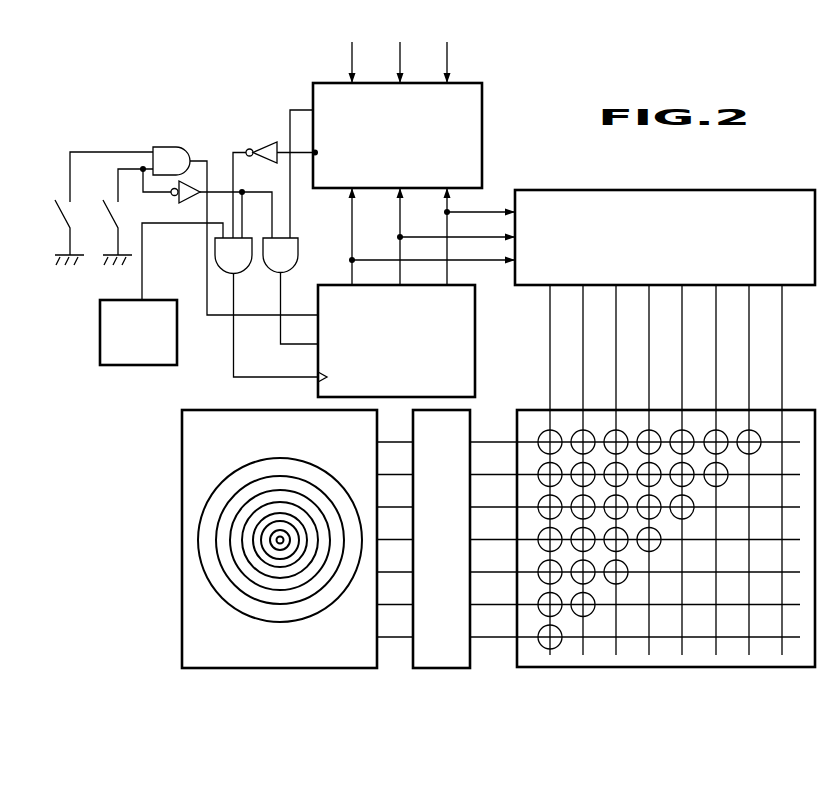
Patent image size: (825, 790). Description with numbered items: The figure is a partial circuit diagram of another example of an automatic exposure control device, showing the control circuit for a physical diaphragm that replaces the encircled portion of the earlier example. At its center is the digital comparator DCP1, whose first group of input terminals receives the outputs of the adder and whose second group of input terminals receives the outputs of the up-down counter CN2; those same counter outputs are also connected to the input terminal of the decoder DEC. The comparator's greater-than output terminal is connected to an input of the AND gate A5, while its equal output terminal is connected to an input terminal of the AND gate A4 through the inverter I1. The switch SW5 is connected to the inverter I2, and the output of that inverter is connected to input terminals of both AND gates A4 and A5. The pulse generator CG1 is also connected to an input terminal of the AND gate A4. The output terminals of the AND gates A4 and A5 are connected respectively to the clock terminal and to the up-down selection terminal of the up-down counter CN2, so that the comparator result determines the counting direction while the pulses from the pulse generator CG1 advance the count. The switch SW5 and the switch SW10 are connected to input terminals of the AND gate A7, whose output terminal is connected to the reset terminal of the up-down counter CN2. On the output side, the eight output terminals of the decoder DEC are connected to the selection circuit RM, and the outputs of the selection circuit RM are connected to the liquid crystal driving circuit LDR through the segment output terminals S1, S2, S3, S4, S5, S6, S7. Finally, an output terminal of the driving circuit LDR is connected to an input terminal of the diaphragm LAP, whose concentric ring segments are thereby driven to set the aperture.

The switch SW10 is at (88, 208).
The switch SW5 is at (124, 215).
The AND gate A7 is at (235, 231).
The inverter I1 is at (275, 179).
The inverter I2 is at (212, 209).
The AND gate A4 is at (271, 310).
The AND gate A5 is at (290, 227).
The pulse generator CG1 is at (161, 294).
The digital comparator DCP1 is at (414, 163).
The up-down counter CN2 is at (396, 341).
The decoder DEC is at (665, 422).
The diaphragm LAP is at (297, 539).
The liquid crystal driving circuit LDR is at (441, 539).
The selection circuit RM is at (642, 539).
The segment output terminal S1 is at (635, 435).
The segment output terminal S2 is at (635, 467).
The segment output terminal S3 is at (635, 500).
The segment output terminal S4 is at (635, 532).
The segment output terminal S5 is at (635, 565).
The segment output terminal S6 is at (635, 597).
The segment output terminal S7 is at (635, 630).